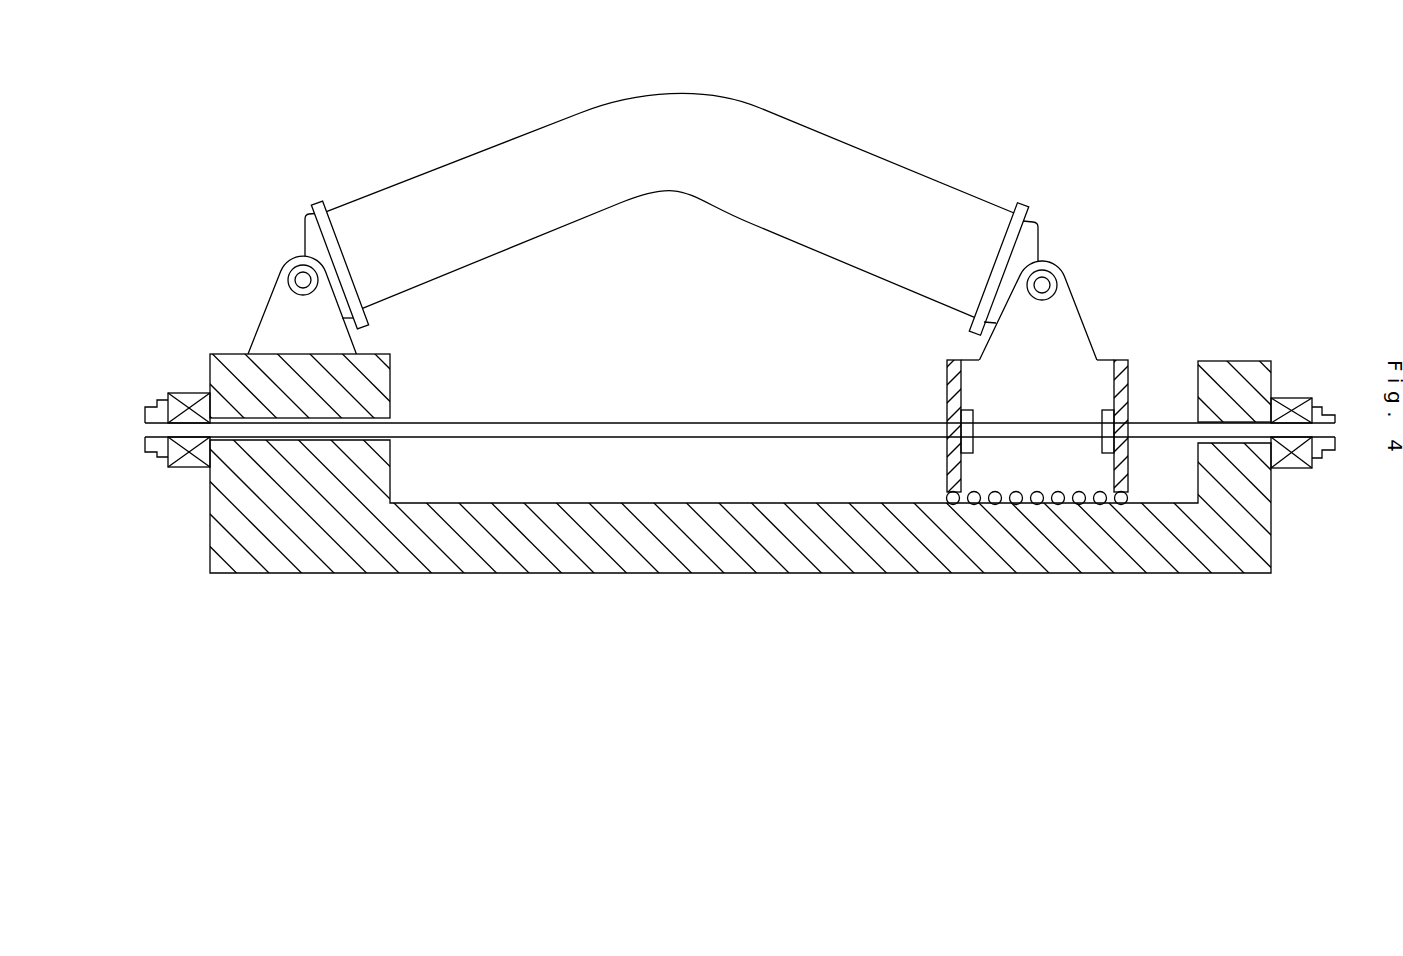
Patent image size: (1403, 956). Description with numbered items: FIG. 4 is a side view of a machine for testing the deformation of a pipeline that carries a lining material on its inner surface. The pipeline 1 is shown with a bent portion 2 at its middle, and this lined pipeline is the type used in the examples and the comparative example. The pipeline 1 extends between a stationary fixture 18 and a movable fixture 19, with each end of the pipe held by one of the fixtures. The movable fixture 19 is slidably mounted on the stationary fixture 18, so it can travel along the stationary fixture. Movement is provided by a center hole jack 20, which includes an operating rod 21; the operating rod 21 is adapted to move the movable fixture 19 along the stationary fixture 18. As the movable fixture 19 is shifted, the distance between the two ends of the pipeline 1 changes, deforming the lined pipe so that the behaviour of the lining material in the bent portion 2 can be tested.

The pipeline 1 is at (863, 148).
The bent portion 2 is at (685, 107).
The stationary fixture 18 is at (683, 555).
The movable fixture 19 is at (1068, 333).
The center hole jack 20 is at (188, 392).
The operating rod 21 is at (523, 430).